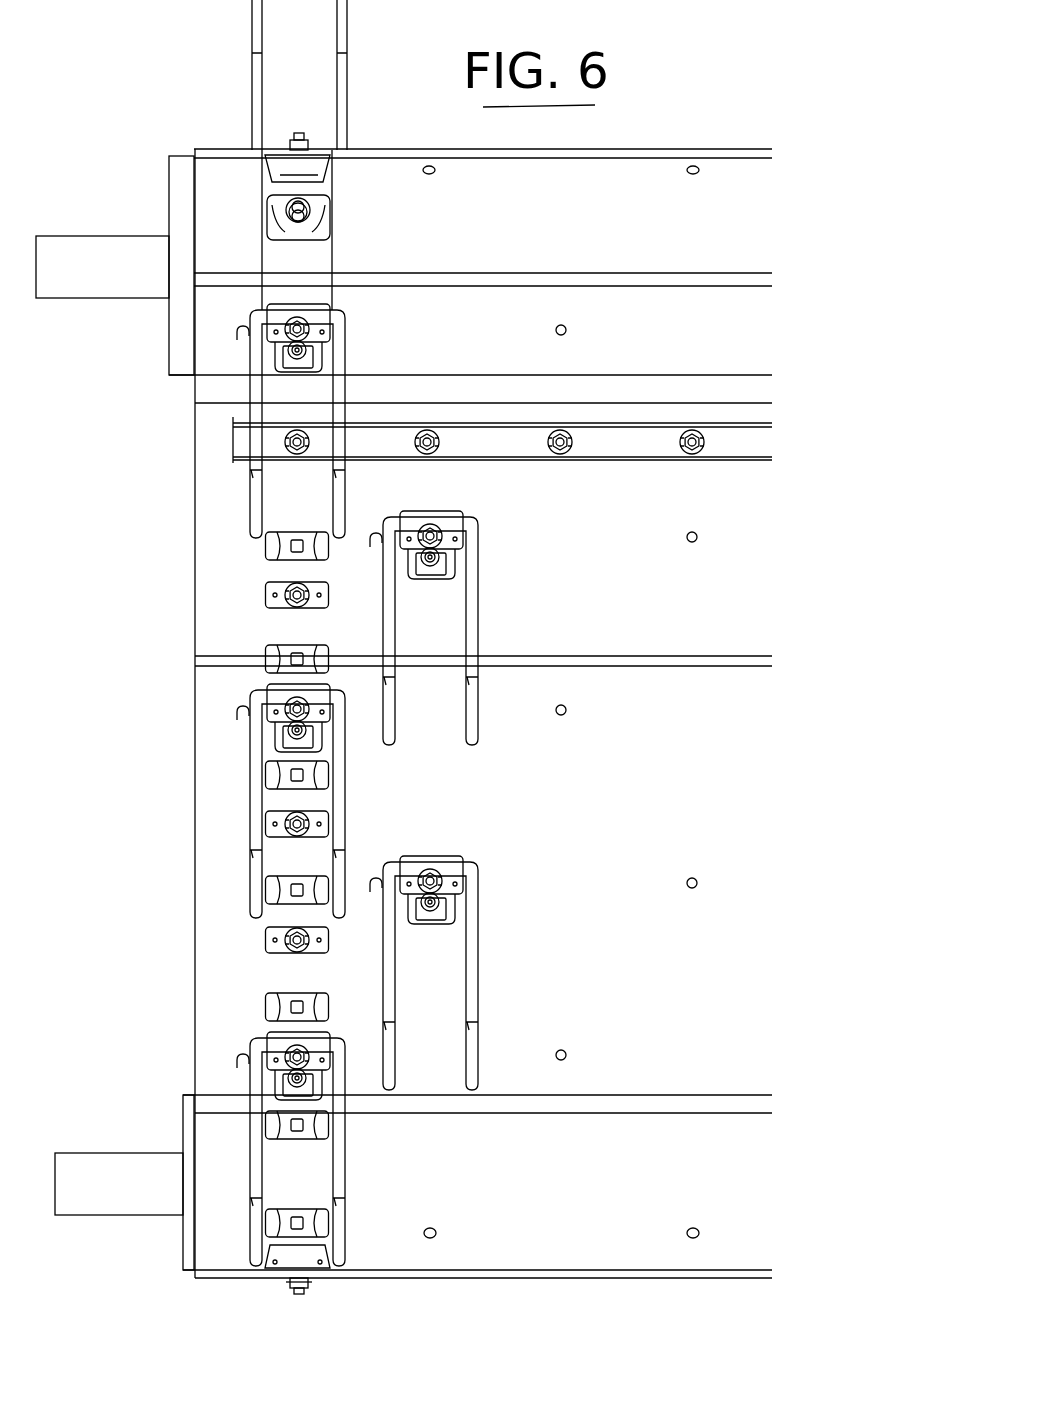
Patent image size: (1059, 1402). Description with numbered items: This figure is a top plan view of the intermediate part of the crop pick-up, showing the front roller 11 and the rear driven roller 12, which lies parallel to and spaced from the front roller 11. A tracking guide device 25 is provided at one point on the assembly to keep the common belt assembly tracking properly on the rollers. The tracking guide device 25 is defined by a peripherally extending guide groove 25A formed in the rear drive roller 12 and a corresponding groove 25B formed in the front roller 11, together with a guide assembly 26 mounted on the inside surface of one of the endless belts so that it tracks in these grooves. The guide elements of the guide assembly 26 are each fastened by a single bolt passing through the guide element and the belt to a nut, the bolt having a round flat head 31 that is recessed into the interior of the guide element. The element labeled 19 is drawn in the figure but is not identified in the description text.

The rear driven roller 12 is at (183, 198).
The front roller 11 is at (187, 1115).
The guide groove 25A is at (333, 242).
The groove 25B is at (340, 1263).
The guide assembly 26 is at (267, 552).
The round flat head 31 is at (287, 543).
The tracking guide device 25 is at (247, 611).
The U-shaped clip 19 is at (508, 604).